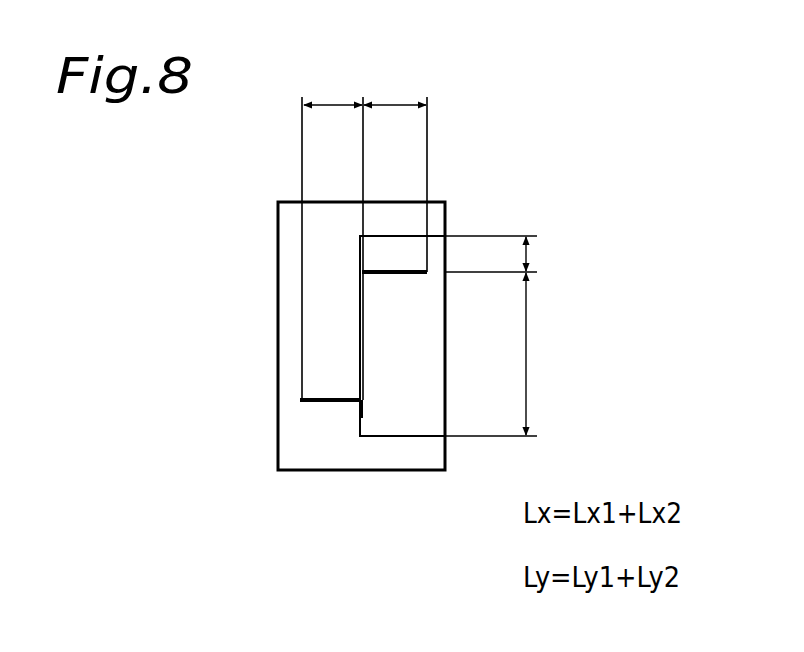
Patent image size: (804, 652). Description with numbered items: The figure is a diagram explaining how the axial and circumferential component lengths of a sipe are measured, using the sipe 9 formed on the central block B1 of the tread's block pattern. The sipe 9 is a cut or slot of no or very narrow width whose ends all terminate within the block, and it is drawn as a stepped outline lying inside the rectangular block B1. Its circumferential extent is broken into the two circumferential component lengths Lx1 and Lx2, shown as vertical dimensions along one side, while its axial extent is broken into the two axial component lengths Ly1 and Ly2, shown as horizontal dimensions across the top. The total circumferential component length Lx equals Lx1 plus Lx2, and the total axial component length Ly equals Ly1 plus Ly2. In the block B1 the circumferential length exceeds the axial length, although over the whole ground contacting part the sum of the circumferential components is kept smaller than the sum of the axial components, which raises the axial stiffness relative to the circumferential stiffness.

The sipe 9 is at (357, 417).
The central block B1 is at (417, 360).
The first circumferential component length of the sipe Lx1 is at (526, 255).
The second circumferential component length of the sipe Lx2 is at (526, 357).
The first axial component length of the sipe Ly1 is at (330, 102).
The second axial component length of the sipe Ly2 is at (387, 102).